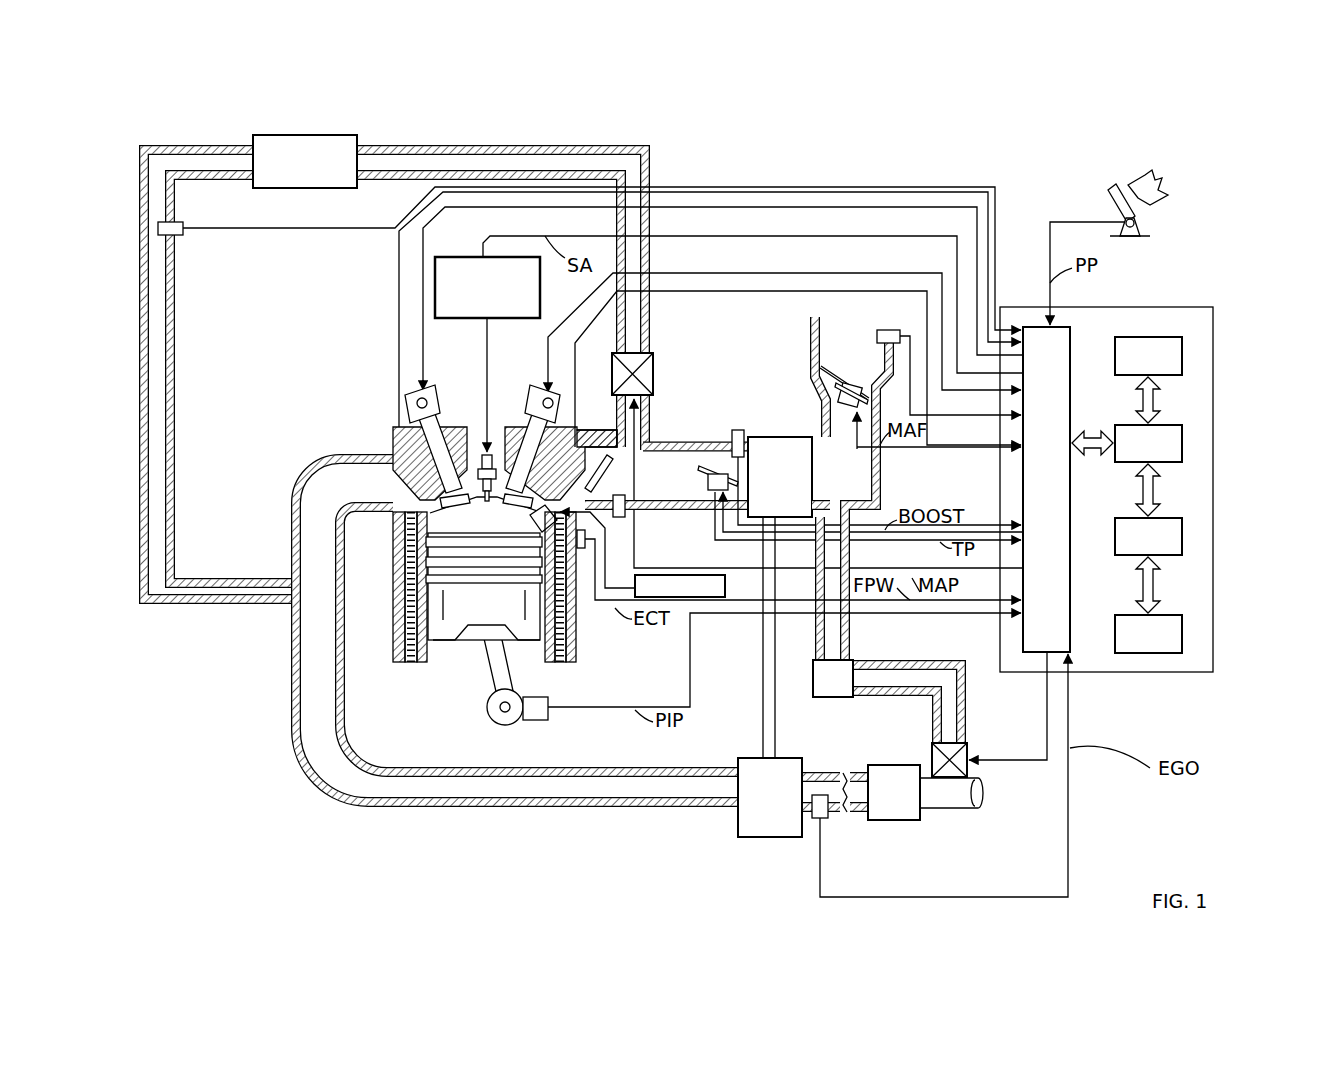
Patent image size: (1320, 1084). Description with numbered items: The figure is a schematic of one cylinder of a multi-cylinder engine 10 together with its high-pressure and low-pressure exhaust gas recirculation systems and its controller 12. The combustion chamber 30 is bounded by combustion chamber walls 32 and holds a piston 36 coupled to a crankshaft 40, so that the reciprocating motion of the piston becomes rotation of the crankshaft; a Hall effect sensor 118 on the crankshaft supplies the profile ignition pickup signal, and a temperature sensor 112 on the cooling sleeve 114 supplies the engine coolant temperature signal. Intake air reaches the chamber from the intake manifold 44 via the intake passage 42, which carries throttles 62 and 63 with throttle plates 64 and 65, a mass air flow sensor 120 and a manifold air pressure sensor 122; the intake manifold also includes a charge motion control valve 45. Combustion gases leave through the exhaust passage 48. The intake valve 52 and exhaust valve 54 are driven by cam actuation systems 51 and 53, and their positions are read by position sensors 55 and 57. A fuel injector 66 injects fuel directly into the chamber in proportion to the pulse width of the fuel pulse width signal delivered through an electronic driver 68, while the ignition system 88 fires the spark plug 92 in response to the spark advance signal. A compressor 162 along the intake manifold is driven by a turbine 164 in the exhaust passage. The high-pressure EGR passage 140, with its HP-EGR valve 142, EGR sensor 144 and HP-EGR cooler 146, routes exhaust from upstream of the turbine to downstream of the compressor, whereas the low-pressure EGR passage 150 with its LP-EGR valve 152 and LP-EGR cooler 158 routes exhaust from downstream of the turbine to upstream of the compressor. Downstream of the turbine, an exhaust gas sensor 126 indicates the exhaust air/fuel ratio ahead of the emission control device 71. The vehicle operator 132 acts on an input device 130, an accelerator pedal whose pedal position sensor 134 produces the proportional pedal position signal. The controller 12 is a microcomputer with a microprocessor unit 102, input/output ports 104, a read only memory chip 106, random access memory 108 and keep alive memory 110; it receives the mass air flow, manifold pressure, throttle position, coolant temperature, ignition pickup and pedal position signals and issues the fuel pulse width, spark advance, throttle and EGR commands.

The engine 10 is at (330, 382).
The controller 12 is at (1205, 310).
The combustion chamber 30 is at (398, 623).
The combustion chamber walls 32 is at (430, 660).
The piston 36 is at (468, 640).
The crankshaft 40 is at (495, 725).
The intake passage 42 is at (850, 488).
The intake manifold 44 is at (662, 467).
The charge motion control valve 45 is at (599, 465).
The exhaust passage 48 is at (518, 630).
The cam actuation system 51 is at (532, 392).
The intake valve 52 is at (530, 492).
The cam actuation system 53 is at (432, 392).
The exhaust valve 54 is at (440, 488).
The position sensor 55 is at (560, 406).
The position sensor 57 is at (407, 408).
The throttle 62 is at (700, 472).
The throttle 63 is at (820, 368).
The throttle plate 64 is at (708, 484).
The throttle plate 65 is at (838, 397).
The fuel injector 66 is at (529, 522).
The electronic driver 68 is at (725, 586).
The emission control device 71 is at (925, 792).
The ignition system 88 is at (447, 257).
The spark plug 92 is at (490, 450).
The microprocessor unit 102 is at (1182, 437).
The input/output ports 104 is at (1072, 335).
The read only memory chip 106 is at (1182, 352).
The random access memory 108 is at (1182, 533).
The keep alive memory 110 is at (1182, 630).
The temperature sensor 112 is at (580, 550).
The cooling sleeve 114 is at (565, 628).
The Hall effect sensor 118 is at (540, 722).
The mass air flow sensor 120 is at (889, 330).
The manifold air pressure sensor 122 is at (625, 514).
The exhaust gas sensor 126 is at (826, 820).
The input device 130 is at (1108, 200).
The vehicle operator 132 is at (1160, 185).
The pedal position sensor 134 is at (1142, 225).
The high-pressure EGR passage 140 is at (560, 150).
The HP-EGR valve 142 is at (653, 375).
The EGR sensor 144 is at (178, 236).
The HP-EGR cooler 146 is at (395, 359).
The low-pressure EGR passage 150 is at (930, 758).
The LP-EGR valve 152 is at (812, 766).
The LP-EGR cooler 158 is at (887, 701).
The compressor 162 is at (876, 594).
The turbine 164 is at (803, 797).